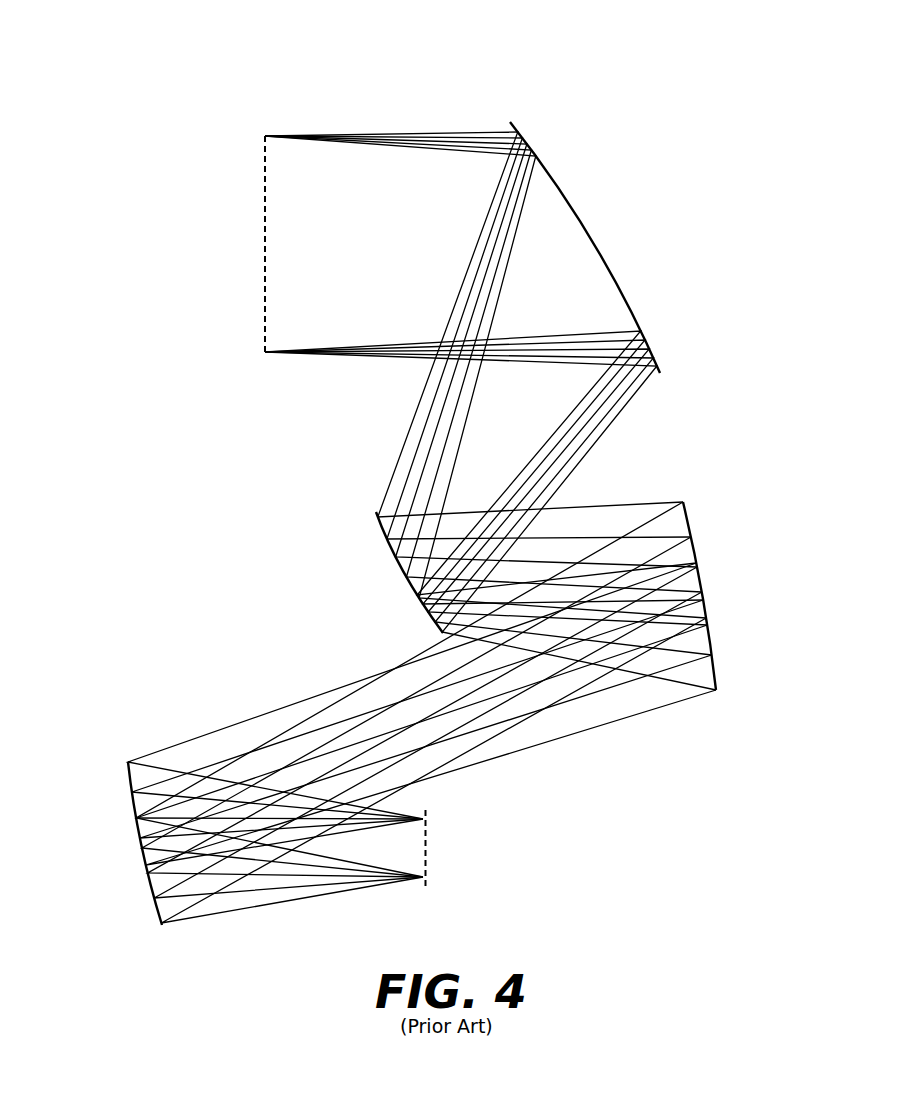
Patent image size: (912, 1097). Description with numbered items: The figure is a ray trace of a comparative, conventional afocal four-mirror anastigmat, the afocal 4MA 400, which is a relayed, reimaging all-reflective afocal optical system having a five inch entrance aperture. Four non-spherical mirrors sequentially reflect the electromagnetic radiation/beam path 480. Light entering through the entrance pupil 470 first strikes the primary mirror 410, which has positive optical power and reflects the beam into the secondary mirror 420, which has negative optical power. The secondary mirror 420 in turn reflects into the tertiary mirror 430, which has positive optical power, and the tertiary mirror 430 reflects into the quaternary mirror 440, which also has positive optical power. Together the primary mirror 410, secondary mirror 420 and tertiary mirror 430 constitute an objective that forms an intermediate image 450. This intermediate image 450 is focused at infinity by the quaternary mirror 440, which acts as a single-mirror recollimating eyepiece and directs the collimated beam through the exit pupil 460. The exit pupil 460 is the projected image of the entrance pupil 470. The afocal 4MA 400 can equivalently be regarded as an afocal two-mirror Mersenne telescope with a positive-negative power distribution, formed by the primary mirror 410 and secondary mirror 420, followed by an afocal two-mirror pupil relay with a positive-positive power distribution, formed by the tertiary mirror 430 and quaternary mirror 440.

The afocal 4MA 400 is at (671, 85).
The primary mirror 410 is at (583, 220).
The secondary mirror 420 is at (407, 564).
The tertiary mirror 430 is at (698, 550).
The quaternary mirror 440 is at (137, 835).
The intermediate image 450 is at (478, 772).
The exit pupil 460 is at (428, 855).
The entrance pupil 470 is at (262, 226).
The electromagnetic radiation/beam path 480 is at (406, 128).